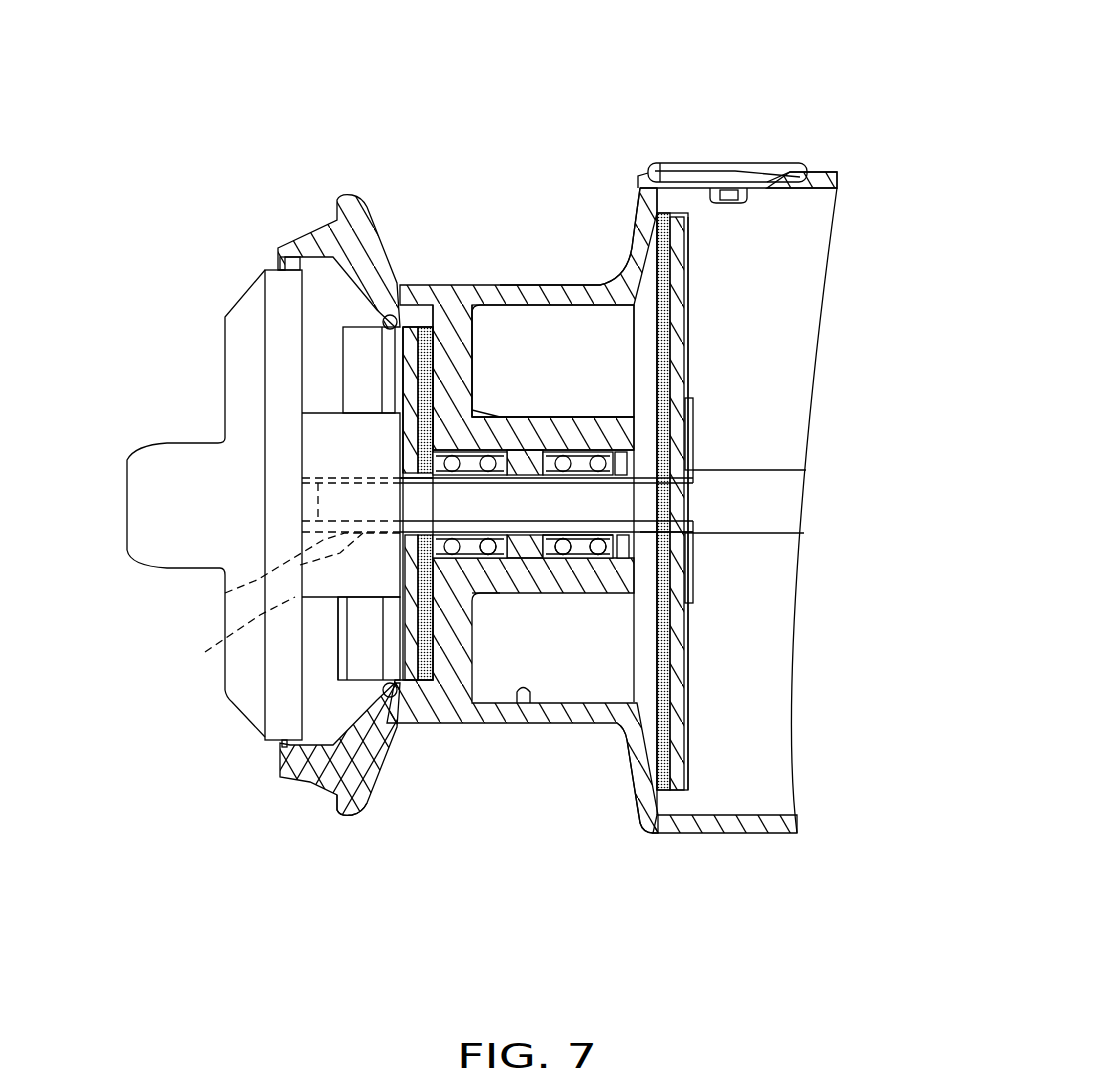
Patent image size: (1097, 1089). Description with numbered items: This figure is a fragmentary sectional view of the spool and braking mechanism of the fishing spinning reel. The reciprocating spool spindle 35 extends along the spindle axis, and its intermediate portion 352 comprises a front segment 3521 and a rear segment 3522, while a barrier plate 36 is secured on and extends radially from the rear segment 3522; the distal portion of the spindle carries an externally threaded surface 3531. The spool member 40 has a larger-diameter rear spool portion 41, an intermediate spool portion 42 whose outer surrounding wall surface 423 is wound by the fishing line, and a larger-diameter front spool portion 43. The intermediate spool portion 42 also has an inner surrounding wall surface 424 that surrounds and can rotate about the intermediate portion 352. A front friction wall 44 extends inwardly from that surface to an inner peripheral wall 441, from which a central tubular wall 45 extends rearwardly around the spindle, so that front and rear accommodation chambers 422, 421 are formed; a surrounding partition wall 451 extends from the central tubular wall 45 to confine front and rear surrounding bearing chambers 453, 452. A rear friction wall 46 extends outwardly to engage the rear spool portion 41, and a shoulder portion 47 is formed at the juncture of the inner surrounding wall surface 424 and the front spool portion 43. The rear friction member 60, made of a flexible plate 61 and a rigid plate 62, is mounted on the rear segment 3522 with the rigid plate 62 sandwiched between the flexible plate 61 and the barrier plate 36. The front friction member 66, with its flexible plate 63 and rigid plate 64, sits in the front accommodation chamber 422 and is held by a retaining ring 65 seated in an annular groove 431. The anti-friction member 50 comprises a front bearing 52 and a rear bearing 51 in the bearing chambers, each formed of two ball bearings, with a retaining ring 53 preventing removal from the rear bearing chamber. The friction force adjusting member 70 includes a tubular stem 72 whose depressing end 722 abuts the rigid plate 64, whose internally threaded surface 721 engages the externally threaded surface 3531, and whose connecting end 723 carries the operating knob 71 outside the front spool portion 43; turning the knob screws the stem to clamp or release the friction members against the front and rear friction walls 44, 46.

The reciprocating spool spindle 35 is at (758, 478).
The barrier plate 36 is at (694, 408).
The spool member 40 is at (823, 173).
The rear spool portion 41 is at (820, 165).
The intermediate spool portion 42 is at (433, 285).
The front spool portion 43 is at (343, 200).
The front friction wall 44 is at (467, 340).
The central tubular wall 45 is at (547, 420).
The rear friction wall 46 is at (630, 240).
The shoulder portion 47 is at (300, 240).
The anti-friction member 50 is at (448, 560).
The rear bearing 51 is at (562, 560).
The front bearing 52 is at (490, 560).
The retaining ring 53 is at (605, 560).
The rear friction member 60 is at (718, 45).
The flexible plate 61 is at (662, 213).
The rigid plate 62 is at (680, 217).
The flexible plate 63 is at (420, 700).
The rigid plate 64 is at (400, 700).
The retaining ring 65 is at (333, 784).
The front friction member 66 is at (352, 870).
The friction force adjusting member 70 is at (225, 367).
The operating knob 71 is at (263, 268).
The tubular stem 72 is at (345, 650).
The intermediate portion 352 is at (640, 531).
The rear accommodation chamber 421 is at (593, 323).
The front accommodation chamber 422 is at (413, 327).
The outer surrounding wall surface 423 is at (542, 285).
The inner surrounding wall surface 424 is at (527, 705).
The annular groove 431 is at (385, 720).
The inner peripheral wall 441 is at (430, 380).
The surrounding partition wall 451 is at (495, 417).
The rear surrounding bearing chamber 452 is at (590, 600).
The front surrounding bearing chamber 453 is at (476, 600).
The internally threaded surface 721 is at (205, 652).
The depressing end 722 is at (365, 625).
The connecting end 723 is at (300, 565).
The front segment 3521 is at (400, 478).
The rear segment 3522 is at (670, 511).
The externally threaded surface 3531 is at (225, 593).